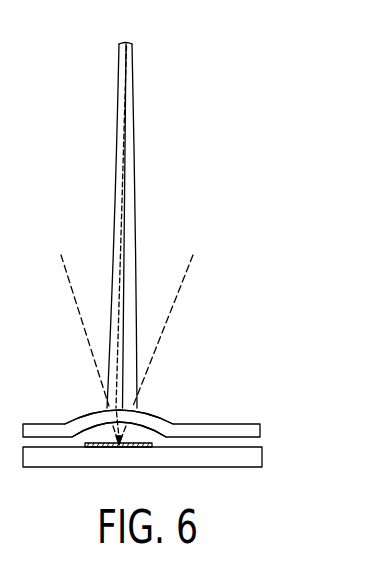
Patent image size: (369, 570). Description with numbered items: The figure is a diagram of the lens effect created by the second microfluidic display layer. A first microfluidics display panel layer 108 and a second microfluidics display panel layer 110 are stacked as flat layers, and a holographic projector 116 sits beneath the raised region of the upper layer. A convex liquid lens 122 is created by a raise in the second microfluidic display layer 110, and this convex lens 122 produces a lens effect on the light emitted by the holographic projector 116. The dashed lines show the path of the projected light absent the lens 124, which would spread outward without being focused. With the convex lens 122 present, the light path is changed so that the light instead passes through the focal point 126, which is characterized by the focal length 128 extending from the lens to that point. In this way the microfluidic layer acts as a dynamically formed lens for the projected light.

The first microfluidics display panel layer 108 is at (262, 461).
The second microfluidics display panel layer 110 is at (262, 433).
The holographic projector 116 is at (92, 445).
The convex liquid lens 122 is at (167, 417).
The path of the projected light absent the lens 124 is at (157, 349).
The focal point 126 is at (125, 42).
The focal length 128 is at (130, 160).